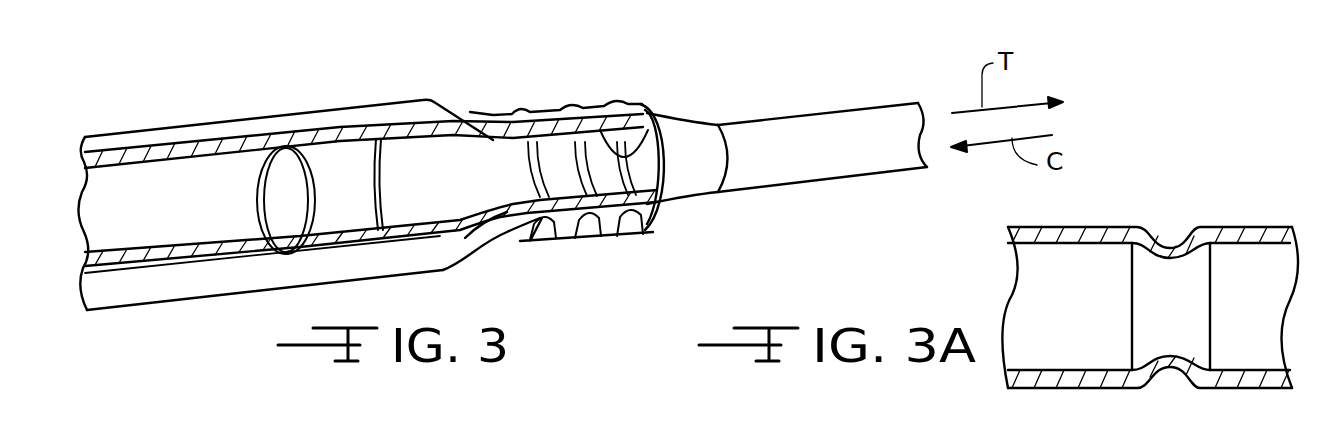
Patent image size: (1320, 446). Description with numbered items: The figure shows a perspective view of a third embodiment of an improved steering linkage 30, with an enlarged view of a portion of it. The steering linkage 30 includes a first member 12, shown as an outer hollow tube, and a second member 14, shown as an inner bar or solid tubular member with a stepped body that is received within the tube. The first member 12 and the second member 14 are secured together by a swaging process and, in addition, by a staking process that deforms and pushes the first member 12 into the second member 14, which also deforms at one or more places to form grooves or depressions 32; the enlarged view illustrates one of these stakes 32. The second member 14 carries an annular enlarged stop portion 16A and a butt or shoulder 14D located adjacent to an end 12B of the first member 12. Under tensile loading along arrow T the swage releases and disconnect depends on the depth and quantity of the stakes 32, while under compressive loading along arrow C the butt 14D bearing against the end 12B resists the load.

In FIG. 3, the first member 12 is at (185, 129).
In FIG. 3, the enlarged stop portion 16A is at (327, 163).
In FIG. 3, the steering linkage 30 is at (401, 79).
In FIG. 3, the butt or shoulder 14D is at (602, 148).
In FIG. 3, the end of the first member 12B is at (660, 200).
In FIG. 3, the second member 14 is at (797, 115).
In FIG. 3, the grooves or depressions 32 is at (540, 233).
In FIG. 3A, the grooves or depressions 32 is at (1175, 240).